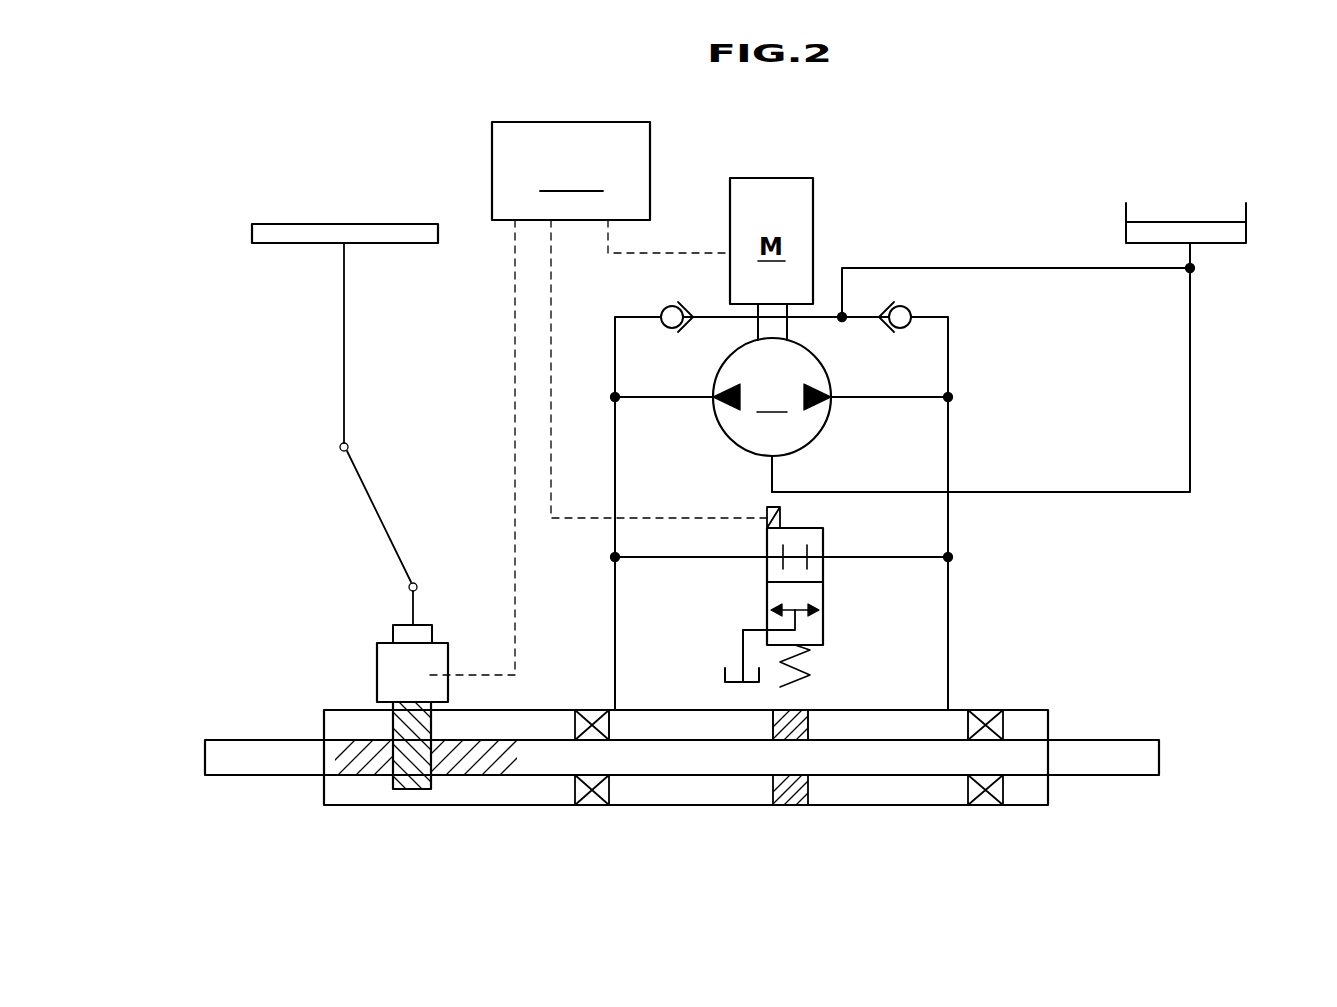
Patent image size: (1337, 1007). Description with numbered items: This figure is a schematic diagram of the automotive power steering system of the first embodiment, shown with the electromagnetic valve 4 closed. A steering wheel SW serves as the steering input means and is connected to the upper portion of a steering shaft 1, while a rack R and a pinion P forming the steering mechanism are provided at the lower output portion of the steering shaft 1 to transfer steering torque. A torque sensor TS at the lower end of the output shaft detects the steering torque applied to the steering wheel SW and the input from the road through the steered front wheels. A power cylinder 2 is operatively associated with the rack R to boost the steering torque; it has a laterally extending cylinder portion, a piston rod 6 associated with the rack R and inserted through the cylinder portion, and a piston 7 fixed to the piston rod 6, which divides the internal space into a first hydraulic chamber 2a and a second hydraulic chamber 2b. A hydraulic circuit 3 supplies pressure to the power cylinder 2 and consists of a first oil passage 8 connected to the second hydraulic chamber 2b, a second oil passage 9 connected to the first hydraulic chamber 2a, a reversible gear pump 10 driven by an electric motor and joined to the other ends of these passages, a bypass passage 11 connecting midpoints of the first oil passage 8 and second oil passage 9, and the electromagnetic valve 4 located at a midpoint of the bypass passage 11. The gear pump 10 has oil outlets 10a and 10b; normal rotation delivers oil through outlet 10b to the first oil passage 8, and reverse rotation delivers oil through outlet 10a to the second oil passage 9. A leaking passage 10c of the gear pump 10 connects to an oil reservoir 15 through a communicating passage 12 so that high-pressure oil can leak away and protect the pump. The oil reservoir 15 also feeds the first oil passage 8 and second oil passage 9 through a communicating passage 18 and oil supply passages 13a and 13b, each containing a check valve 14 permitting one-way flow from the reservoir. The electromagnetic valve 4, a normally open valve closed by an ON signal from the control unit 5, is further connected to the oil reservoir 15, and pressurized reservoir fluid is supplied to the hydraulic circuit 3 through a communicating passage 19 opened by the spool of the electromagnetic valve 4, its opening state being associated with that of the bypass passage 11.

The steering wheel SW is at (312, 223).
The steering shaft 1 is at (343, 357).
The torque sensor TS is at (376, 662).
The control unit 5 is at (652, 134).
The check valve 14 is at (660, 310).
The oil supply passage 13b is at (613, 383).
The oil supply passage 13a is at (950, 360).
The gear pump 10 is at (772, 397).
The oil outlet 10a is at (712, 400).
The oil outlet 10b is at (833, 400).
The leaking passage 10c is at (770, 458).
The communicating passage 12 is at (1064, 491).
The communicating passage 18 is at (981, 267).
The oil reservoir 15 is at (1248, 222).
The bypass passage 11 is at (705, 580).
The electromagnetic valve 4 is at (838, 595).
The communicating passage 19 is at (740, 647).
The second oil passage 9 is at (613, 657).
The first oil passage 8 is at (950, 665).
The hydraulic circuit 3 is at (980, 571).
The power cylinder 2 is at (775, 812).
The first hydraulic chamber 2a is at (692, 791).
The second hydraulic chamber 2b is at (886, 792).
The piston rod 6 is at (633, 763).
The piston 7 is at (796, 797).
The rack R is at (351, 763).
The pinion P is at (411, 781).